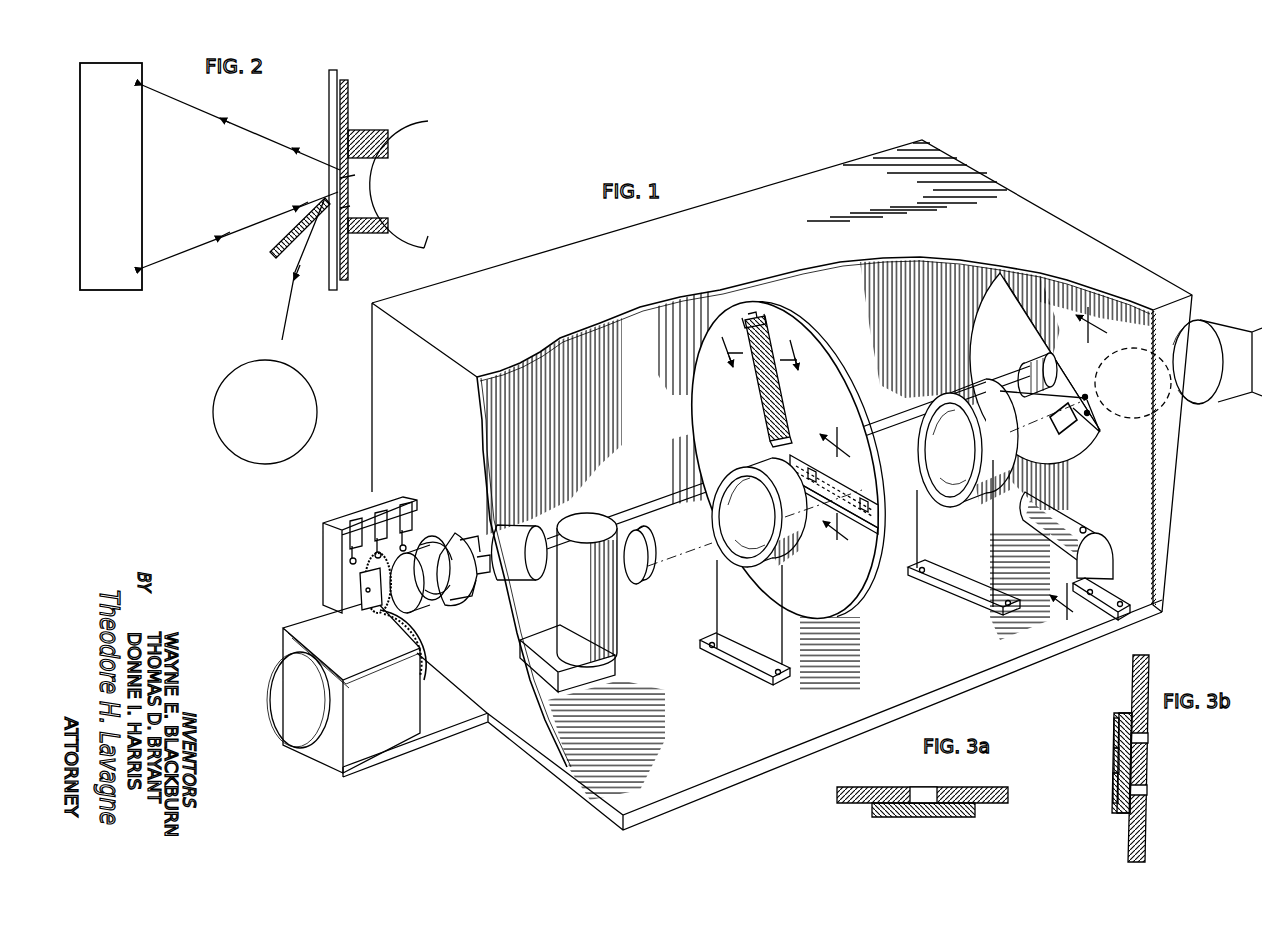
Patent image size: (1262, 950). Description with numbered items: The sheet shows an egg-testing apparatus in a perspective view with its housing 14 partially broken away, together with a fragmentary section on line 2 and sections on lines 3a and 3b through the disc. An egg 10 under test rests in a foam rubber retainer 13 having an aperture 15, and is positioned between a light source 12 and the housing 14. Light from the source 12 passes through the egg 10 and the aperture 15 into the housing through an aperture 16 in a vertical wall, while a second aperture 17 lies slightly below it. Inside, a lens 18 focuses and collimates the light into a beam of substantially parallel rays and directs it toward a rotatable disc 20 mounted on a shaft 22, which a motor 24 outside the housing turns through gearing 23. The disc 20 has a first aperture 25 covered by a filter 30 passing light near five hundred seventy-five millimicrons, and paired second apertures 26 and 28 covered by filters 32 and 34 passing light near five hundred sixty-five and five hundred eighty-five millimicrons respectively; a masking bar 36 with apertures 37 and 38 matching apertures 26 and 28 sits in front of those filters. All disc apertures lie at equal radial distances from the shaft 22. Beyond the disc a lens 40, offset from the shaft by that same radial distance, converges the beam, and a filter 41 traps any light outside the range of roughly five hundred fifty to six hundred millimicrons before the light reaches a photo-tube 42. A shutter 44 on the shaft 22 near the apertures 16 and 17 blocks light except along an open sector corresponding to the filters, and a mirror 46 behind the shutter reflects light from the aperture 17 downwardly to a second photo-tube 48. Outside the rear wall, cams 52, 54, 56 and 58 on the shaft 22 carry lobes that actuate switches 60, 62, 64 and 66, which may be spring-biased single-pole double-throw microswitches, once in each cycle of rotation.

In FIG. 1, the section line 2— 2 is at (1083, 469).
In FIG. 1, the section line 3A—3A 3a is at (764, 355).
In FIG. 1, the section line 3B—3B 3b is at (838, 490).
In FIG. 2, the egg 10 is at (418, 242).
In FIG. 1, the egg 10 is at (1165, 405).
In FIG. 1, the light source 12 is at (1222, 333).
In FIG. 2, the retainer 13 is at (372, 233).
In FIG. 2, the housing 14 is at (349, 96).
In FIG. 1, the housing 14 is at (1165, 497).
In FIG. 2, the aperture 15 is at (360, 170).
In FIG. 2, the aperture 16 is at (335, 184).
In FIG. 1, the aperture 16 is at (1085, 395).
In FIG. 2, the second aperture 17 is at (350, 206).
In FIG. 1, the second aperture 17 is at (1093, 413).
In FIG. 2, the lens 18 is at (138, 242).
In FIG. 1, the lens 18 is at (952, 393).
In FIG. 1, the rotatable disc 20 is at (788, 460).
In FIG. 3A, the rotatable disc 20 is at (936, 780).
In FIG. 3B, the rotatable disc 20 is at (1138, 758).
In FIG. 1, the shaft 22 is at (655, 503).
In FIG. 1, the gearing 23 is at (432, 665).
In FIG. 1, the motor 24 is at (292, 745).
In FIG. 3A, the first aperture 25 is at (924, 790).
In FIG. 3B, the second aperture 26 is at (1150, 738).
In FIG. 3B, the second aperture 28 is at (1149, 791).
In FIG. 1, the filter 30 is at (780, 400).
In FIG. 3A, the filter 30 is at (978, 812).
In FIG. 1, the filter 32 is at (836, 512).
In FIG. 3B, the filter 32 is at (1122, 713).
In FIG. 1, the filter 34 is at (856, 532).
In FIG. 3B, the filter 34 is at (1122, 814).
In FIG. 3B, the masking bar 36 is at (1114, 762).
In FIG. 3B, the aperture 37 is at (1114, 738).
In FIG. 3B, the aperture 38 is at (1113, 795).
In FIG. 1, the lens 40 is at (756, 568).
In FIG. 1, the filter 41 is at (650, 572).
In FIG. 1, the photo-tube 42 is at (618, 622).
In FIG. 2, the shutter 44 is at (330, 270).
In FIG. 1, the shutter 44 is at (975, 340).
In FIG. 2, the mirror 46 is at (278, 256).
In FIG. 1, the mirror 46 is at (1054, 412).
In FIG. 2, the photo-tube 48 is at (262, 360).
In FIG. 1, the photo-tube 48 is at (1098, 518).
In FIG. 1, the cam 52 is at (478, 585).
In FIG. 1, the cam 54 is at (445, 598).
In FIG. 1, the cam 56 is at (418, 608).
In FIG. 1, the cam 58 is at (395, 605).
In FIG. 1, the switch 60 is at (400, 505).
In FIG. 1, the switch 62 is at (375, 513).
In FIG. 1, the switch 64 is at (350, 521).
In FIG. 1, the switch 66 is at (323, 530).